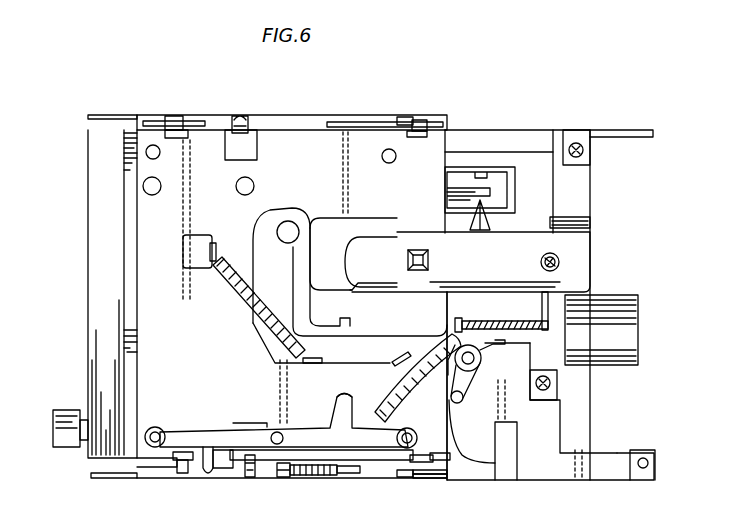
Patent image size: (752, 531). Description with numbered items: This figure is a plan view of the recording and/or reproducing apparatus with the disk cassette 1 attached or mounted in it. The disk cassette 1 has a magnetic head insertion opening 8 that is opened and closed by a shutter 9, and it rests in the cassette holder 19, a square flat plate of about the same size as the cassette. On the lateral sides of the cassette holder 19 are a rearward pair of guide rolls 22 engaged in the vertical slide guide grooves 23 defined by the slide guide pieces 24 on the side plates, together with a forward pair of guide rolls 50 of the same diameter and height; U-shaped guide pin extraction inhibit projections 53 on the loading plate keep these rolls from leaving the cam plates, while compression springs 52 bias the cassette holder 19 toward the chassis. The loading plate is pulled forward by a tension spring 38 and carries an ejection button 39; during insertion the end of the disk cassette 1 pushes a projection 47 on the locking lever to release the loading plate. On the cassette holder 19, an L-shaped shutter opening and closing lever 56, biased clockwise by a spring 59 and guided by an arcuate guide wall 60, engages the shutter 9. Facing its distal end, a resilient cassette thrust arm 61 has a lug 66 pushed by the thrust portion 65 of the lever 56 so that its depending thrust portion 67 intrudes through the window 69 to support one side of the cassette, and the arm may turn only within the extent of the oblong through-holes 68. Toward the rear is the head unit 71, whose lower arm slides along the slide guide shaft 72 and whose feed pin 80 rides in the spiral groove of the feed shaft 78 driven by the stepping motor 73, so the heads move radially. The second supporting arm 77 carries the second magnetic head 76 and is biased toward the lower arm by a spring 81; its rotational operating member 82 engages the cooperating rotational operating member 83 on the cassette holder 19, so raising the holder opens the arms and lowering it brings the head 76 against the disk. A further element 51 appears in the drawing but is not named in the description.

The disk cassette 1 is at (102, 210).
The magnetic head insertion opening 8 is at (356, 262).
The shutter 9 is at (450, 302).
The cassette holder 19 is at (300, 132).
The guide rolls 22 is at (420, 120).
The slide guide grooves 23 is at (410, 117).
The slide guide pieces 24 is at (435, 122).
The tension spring 38 is at (320, 478).
The ejection button 39 is at (66, 410).
The projection 47 is at (459, 404).
The guide rolls 50 is at (174, 116).
The mounting hole 51 is at (150, 145).
The compression springs 52 is at (242, 116).
The guide pin extraction inhibit projections 53 is at (193, 121).
The shutter opening and closing lever 56 is at (262, 338).
The spring 59 is at (222, 273).
The arcuate guide wall 60 is at (430, 378).
The cassette thrust arm 61 is at (228, 430).
The thrust portion 65 is at (395, 365).
The lug 66 is at (338, 402).
The thrust portion 67 is at (207, 477).
The oblong through-holes 68 is at (152, 448).
The cut-out or window 69 is at (222, 469).
The head unit 71 is at (580, 280).
The slide guide shaft 72 is at (576, 226).
The stepping motor 73 is at (640, 310).
The second magnetic head 76 is at (412, 251).
The second supporting arm 77 is at (527, 222).
The feed shaft 78 is at (530, 332).
The feed pin 80 is at (568, 320).
The spring 81 is at (560, 262).
The rotational operating member 82 is at (515, 240).
The cooperating rotational operating member 83 is at (480, 172).